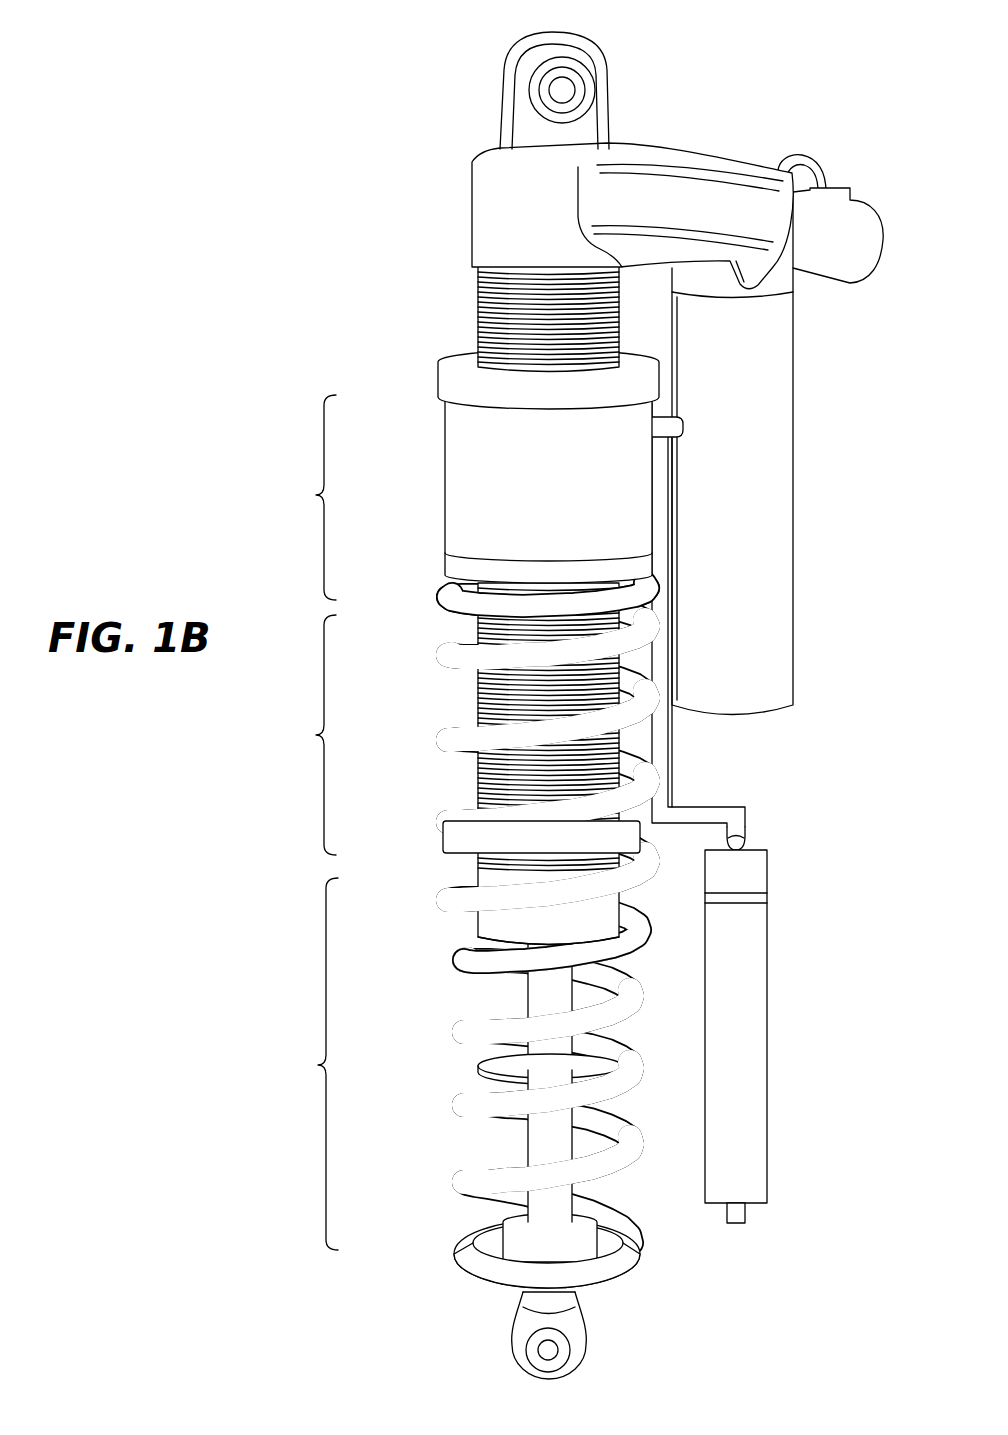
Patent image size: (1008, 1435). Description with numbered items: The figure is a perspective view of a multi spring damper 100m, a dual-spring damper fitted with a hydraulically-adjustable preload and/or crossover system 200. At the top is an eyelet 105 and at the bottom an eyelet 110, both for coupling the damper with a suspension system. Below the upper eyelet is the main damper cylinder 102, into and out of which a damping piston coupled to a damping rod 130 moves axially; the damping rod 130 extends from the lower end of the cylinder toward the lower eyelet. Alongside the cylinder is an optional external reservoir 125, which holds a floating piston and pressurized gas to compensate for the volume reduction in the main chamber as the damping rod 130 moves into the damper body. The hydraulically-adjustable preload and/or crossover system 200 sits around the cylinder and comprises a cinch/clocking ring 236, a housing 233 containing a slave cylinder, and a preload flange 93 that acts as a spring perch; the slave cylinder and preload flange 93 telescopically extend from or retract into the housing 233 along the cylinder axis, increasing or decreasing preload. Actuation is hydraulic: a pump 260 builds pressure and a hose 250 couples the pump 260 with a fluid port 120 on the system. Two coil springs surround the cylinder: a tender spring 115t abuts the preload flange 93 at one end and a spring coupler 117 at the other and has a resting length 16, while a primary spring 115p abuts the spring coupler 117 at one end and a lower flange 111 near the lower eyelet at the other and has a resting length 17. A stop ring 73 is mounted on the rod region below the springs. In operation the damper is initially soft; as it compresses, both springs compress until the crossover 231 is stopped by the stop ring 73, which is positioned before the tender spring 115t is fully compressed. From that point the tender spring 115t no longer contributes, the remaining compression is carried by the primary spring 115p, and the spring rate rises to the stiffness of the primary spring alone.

The multi spring damper 100m is at (322, 35).
The eyelet 105 is at (577, 80).
The main damper cylinder 102 is at (481, 330).
The external reservoir 125 is at (795, 365).
The fluid port 120 is at (683, 430).
The cinch/clocking ring 236 is at (437, 382).
The housing 233 is at (445, 505).
The hydraulically-adjustable preload and/or crossover system 200 is at (305, 497).
The preload flange 93 is at (440, 590).
The tender spring 115t is at (443, 655).
The resting length 16 is at (313, 735).
The spring coupler 117 is at (445, 832).
The hose 250 is at (672, 790).
The crossover 231 is at (470, 928).
The stop ring 73 is at (478, 1067).
The damping rod 130 is at (540, 1144).
The resting length 17 is at (314, 1064).
The primary spring 115p is at (455, 1185).
The lower flange 111 is at (628, 1265).
The eyelet 110 is at (565, 1350).
The pump 260 is at (768, 1010).